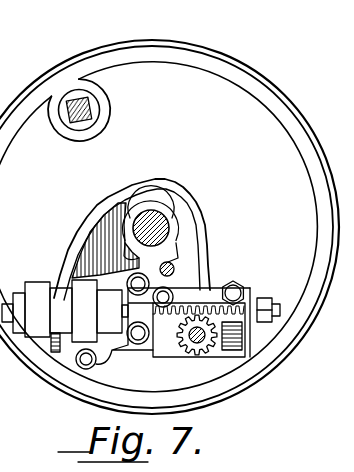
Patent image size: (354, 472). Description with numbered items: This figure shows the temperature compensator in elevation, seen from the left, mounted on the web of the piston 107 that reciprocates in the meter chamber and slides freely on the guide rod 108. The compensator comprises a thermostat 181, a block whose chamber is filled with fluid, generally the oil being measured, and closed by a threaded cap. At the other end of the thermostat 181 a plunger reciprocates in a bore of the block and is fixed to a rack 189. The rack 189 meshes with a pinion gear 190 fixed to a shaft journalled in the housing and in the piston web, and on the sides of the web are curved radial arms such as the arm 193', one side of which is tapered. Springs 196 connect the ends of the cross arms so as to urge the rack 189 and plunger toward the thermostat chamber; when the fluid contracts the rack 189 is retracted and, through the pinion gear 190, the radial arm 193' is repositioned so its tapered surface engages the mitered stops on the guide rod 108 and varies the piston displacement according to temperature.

The piston 107 is at (205, 45).
The curved radial arm 193' is at (132, 234).
The guide rod 108 is at (160, 218).
The thermostat 181 is at (62, 300).
The rack 189 is at (270, 277).
The pinion gear 190 is at (204, 357).
The springs 196 is at (76, 353).